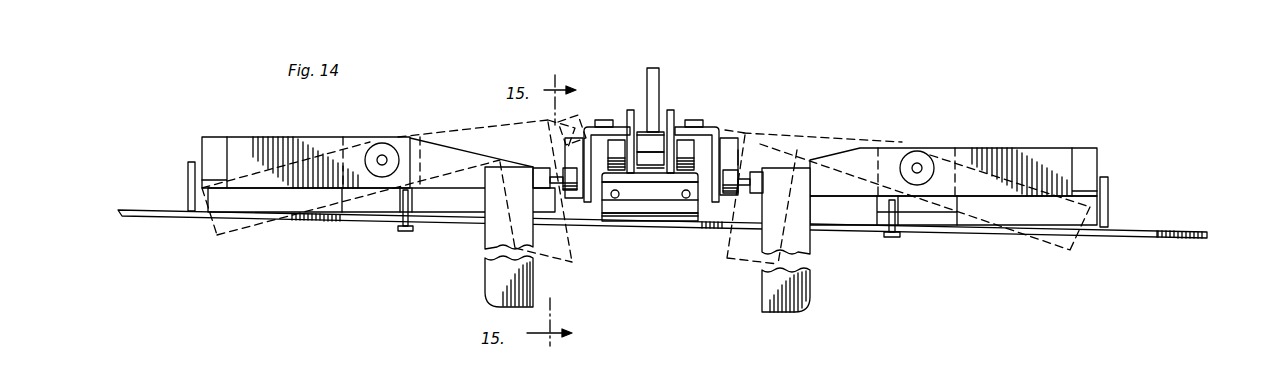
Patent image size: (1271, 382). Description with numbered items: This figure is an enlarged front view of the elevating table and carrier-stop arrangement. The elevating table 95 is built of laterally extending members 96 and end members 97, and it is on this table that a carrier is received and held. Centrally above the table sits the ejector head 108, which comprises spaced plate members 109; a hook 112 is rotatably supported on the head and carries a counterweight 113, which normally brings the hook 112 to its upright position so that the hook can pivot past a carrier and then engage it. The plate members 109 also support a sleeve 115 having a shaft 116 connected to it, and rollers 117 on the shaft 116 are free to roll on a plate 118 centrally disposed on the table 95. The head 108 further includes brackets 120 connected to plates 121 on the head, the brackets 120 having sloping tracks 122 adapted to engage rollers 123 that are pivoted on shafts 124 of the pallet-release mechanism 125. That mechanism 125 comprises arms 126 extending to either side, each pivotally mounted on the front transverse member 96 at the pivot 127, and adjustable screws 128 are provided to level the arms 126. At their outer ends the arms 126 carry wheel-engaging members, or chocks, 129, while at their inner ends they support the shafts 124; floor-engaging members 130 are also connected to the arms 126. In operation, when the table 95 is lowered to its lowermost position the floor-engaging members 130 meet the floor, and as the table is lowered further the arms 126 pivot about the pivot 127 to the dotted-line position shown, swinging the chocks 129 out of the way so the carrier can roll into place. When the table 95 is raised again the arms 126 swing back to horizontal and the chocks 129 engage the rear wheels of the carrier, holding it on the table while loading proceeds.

The elevating table 95 is at (1181, 229).
The laterally extending members 96 is at (175, 216).
The end members 97 is at (188, 176).
The ejector head 108 is at (667, 160).
The spaced plate members 109 is at (631, 109).
The hook 112 is at (656, 86).
The counterweight 113 is at (650, 152).
The sleeve 115 is at (632, 182).
The shaft 116 is at (680, 184).
The rollers 117 is at (640, 186).
The plate 118 is at (740, 148).
The brackets 120 is at (597, 134).
The plates 121 is at (618, 138).
The sloping tracks 122 is at (567, 158).
The rollers 123 is at (578, 198).
The shafts 124 is at (548, 191).
The pallet-release mechanism 125 is at (365, 151).
The arms 126 is at (292, 144).
The pivotal mounting 127 is at (384, 156).
The adjustable screws 128 is at (404, 231).
The wheel-engaging members or chocks 129 is at (207, 147).
The floor-engaging members 130 is at (490, 290).